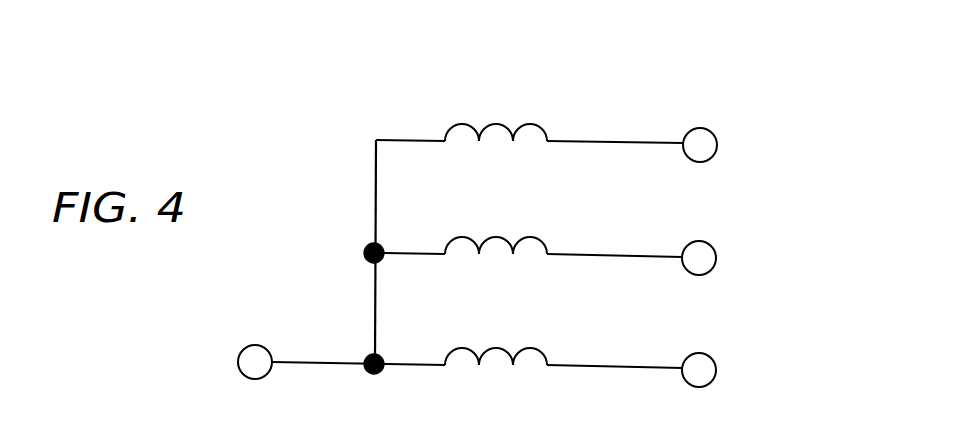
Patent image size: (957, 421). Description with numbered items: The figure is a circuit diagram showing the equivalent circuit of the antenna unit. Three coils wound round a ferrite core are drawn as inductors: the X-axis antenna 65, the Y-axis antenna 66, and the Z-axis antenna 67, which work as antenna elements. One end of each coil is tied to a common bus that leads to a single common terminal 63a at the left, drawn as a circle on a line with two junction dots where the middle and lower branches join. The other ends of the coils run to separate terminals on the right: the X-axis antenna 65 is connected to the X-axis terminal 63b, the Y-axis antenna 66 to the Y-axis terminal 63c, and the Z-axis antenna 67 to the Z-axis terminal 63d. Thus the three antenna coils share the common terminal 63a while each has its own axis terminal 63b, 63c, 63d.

The common terminal 63a is at (234, 350).
The X-axis terminal 63b is at (713, 134).
The Y-axis terminal 63c is at (712, 246).
The Z-axis terminal 63d is at (712, 359).
The X-axis antenna 65 is at (525, 123).
The Y-axis antenna 66 is at (525, 237).
The Z-axis antenna 67 is at (523, 350).